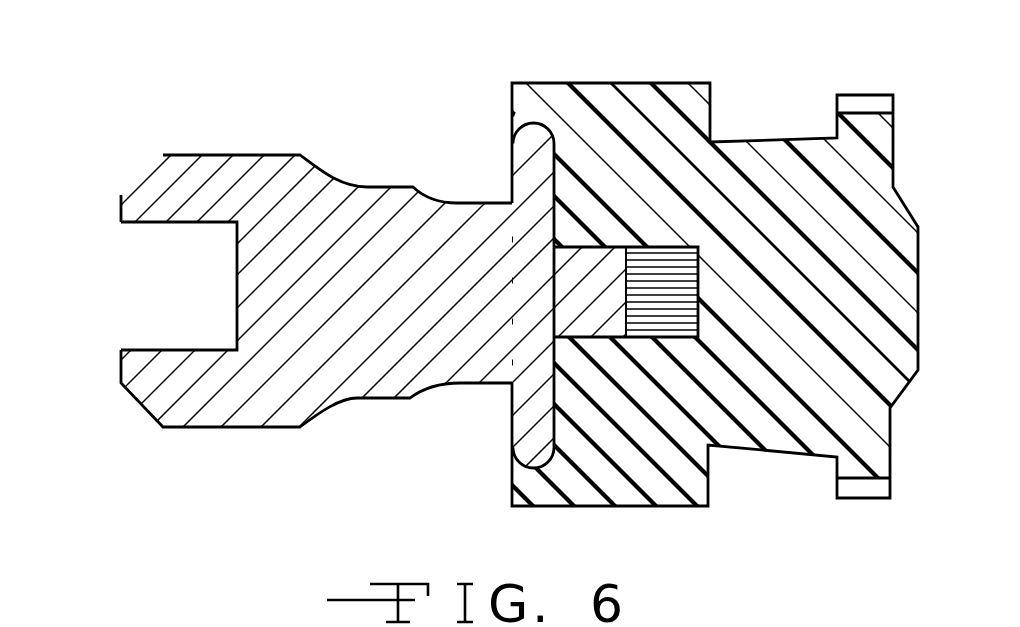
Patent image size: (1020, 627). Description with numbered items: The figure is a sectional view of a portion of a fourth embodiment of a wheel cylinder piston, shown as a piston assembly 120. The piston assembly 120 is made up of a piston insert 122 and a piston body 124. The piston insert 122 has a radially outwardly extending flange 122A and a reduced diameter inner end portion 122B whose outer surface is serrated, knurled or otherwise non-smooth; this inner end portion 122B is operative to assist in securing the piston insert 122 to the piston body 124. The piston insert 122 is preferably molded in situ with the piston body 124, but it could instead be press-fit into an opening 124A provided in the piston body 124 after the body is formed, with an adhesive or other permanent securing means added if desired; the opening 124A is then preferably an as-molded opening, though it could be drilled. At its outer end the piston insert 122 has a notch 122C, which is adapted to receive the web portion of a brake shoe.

The piston assembly 120 is at (510, 313).
The piston insert 122 is at (510, 313).
The radially outwardly extending flange 122A is at (526, 140).
The reduced diameter inner end portion 122B is at (658, 267).
The notch 122C is at (172, 350).
The piston body 124 is at (523, 313).
The opening 124A is at (697, 323).